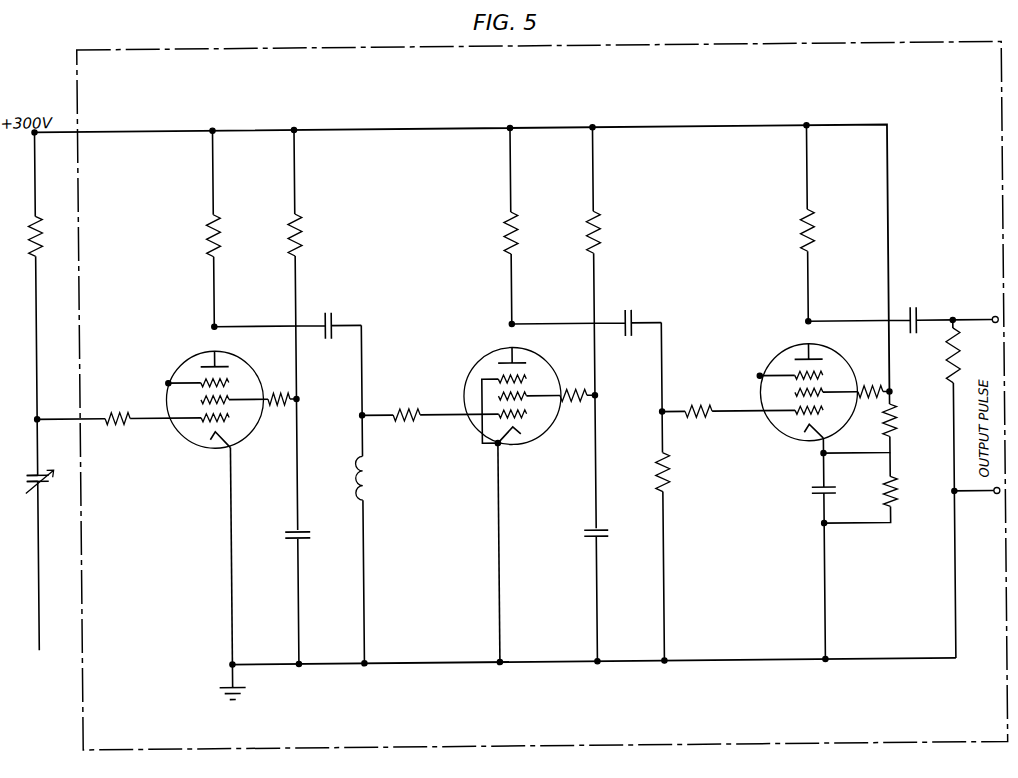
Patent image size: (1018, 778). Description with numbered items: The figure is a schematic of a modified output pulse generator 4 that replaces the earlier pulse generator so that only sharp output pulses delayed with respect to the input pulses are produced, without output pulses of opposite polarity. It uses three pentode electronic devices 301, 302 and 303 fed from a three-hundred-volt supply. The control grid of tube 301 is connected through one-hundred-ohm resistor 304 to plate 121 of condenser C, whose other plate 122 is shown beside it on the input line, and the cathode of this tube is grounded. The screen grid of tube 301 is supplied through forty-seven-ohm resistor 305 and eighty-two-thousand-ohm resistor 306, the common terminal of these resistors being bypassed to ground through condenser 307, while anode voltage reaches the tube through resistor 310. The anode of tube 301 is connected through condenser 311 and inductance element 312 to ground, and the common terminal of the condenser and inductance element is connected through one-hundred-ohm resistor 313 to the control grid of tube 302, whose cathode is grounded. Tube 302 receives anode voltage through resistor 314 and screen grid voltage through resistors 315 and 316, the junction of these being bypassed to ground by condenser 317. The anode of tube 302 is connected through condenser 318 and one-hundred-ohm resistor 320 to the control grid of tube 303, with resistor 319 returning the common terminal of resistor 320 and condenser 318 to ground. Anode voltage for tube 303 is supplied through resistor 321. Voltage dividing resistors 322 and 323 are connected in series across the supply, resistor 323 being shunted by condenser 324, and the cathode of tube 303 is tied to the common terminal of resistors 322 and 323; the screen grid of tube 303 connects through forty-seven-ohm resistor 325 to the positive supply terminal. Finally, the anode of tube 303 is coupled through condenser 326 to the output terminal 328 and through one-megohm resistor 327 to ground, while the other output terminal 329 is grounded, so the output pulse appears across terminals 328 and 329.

The output pulse generator 4 is at (830, 58).
The plate of condenser C 121 is at (26, 472).
The variable capacitor plate 122 is at (44, 479).
The pentode electronic device 301 is at (247, 366).
The pentode electronic device 302 is at (545, 365).
The pentode electronic device 303 is at (842, 362).
The resistor 304 is at (122, 403).
The resistor 305 is at (280, 404).
The resistor 306 is at (300, 243).
The condenser 307 is at (304, 532).
The resistor 310 is at (218, 243).
The condenser 311 is at (330, 313).
The inductance element 312 is at (369, 481).
The resistor 313 is at (411, 407).
The resistor 314 is at (516, 243).
The resistor 315 is at (600, 244).
The resistor 316 is at (575, 403).
The condenser 317 is at (604, 533).
The condenser 318 is at (631, 311).
The resistor 319 is at (668, 479).
The resistor 320 is at (694, 406).
The resistor 321 is at (814, 246).
The voltage dividing resistor 322 is at (895, 430).
The voltage dividing resistor 323 is at (895, 490).
The condenser 324 is at (810, 493).
The resistor 325 is at (870, 390).
The condenser 326 is at (916, 311).
The resistor 327 is at (947, 373).
The output terminal 328 is at (995, 320).
The output terminal 329 is at (995, 498).